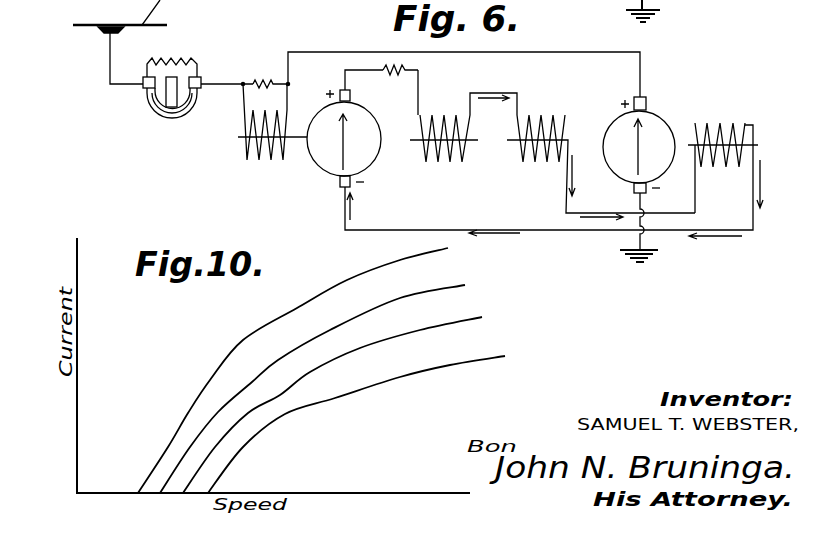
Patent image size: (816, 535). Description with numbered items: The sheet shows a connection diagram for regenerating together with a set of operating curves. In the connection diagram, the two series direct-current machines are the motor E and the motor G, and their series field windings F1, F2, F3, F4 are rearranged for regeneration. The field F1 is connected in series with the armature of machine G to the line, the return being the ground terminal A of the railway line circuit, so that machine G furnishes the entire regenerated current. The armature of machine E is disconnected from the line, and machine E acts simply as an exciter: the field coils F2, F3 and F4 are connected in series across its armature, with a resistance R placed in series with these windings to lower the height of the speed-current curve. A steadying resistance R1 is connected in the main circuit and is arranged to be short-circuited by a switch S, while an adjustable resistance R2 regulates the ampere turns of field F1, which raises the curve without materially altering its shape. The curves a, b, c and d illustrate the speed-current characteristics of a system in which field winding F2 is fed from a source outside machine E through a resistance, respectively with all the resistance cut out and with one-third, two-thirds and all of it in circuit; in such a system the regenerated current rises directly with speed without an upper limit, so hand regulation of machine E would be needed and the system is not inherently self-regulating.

In FIG. 6, the steadying resistance R1 is at (163, 58).
In FIG. 6, the switch S is at (169, 118).
In FIG. 6, the adjustable resistance R2 is at (270, 75).
In FIG. 6, the series field winding F1 is at (272, 134).
In FIG. 6, the motor E is at (345, 128).
In FIG. 6, the resistance R is at (400, 79).
In FIG. 6, the series field winding F2 is at (463, 139).
In FIG. 6, the series field winding F3 is at (601, 167).
In FIG. 6, the motor G is at (639, 145).
In FIG. 6, the series field winding F4 is at (725, 168).
In FIG. 6, the terminal A is at (640, 139).
In FIG. 10, the speed-current curve a is at (298, 308).
In FIG. 10, the speed-current curve b is at (330, 332).
In FIG. 10, the speed-current curve c is at (362, 352).
In FIG. 10, the speed-current curve d is at (397, 377).